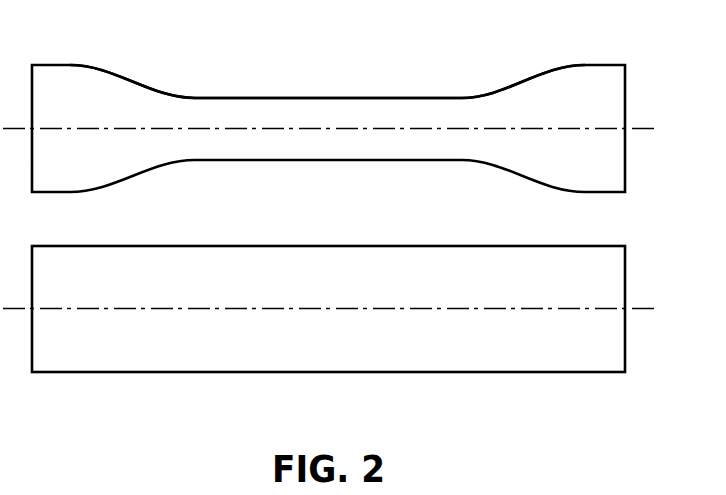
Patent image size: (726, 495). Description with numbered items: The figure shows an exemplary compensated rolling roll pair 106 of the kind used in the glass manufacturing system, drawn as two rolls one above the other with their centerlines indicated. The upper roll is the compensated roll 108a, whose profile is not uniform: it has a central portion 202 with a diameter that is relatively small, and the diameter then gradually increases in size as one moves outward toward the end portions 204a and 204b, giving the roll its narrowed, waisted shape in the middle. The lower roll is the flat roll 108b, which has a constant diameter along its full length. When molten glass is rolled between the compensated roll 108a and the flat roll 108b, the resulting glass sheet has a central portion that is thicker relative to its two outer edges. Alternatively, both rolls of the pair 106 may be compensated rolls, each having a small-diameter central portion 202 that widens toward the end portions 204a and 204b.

The compensated rolling roll pair 106 is at (653, 53).
The compensated roll 108a is at (625, 100).
The flat roll 108b is at (625, 282).
The central portion 202 is at (450, 88).
The end portion 204a is at (520, 78).
The end portion 204b is at (137, 75).